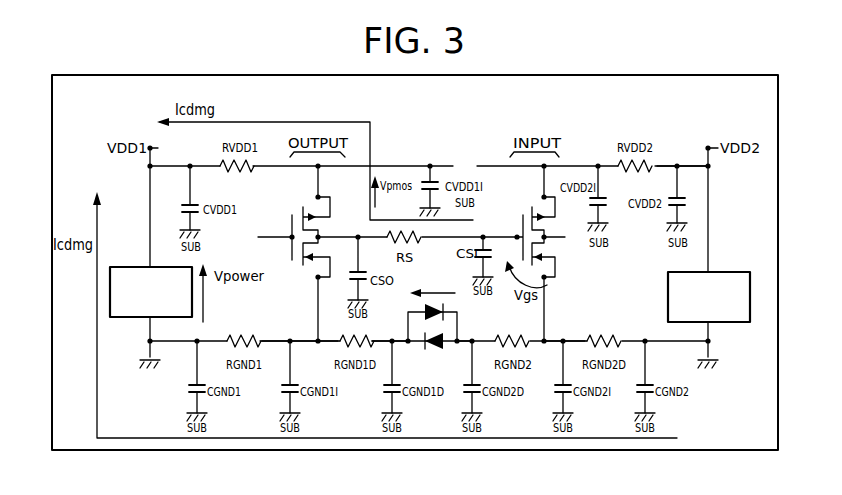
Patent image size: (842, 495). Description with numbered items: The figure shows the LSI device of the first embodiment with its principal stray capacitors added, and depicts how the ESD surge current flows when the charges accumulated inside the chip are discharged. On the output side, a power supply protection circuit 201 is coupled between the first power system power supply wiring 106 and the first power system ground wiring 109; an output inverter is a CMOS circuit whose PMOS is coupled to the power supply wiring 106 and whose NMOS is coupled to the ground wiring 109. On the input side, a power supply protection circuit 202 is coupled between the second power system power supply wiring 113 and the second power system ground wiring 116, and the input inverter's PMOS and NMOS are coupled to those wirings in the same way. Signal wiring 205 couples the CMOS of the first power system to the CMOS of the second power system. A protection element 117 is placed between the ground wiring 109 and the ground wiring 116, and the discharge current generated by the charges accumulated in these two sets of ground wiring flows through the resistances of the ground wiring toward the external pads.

The first power system power supply wiring 106 is at (278, 165).
The first power system ground wiring 109 is at (277, 340).
The second power system power supply wiring 113 is at (661, 165).
The second power system ground wiring 116 is at (556, 340).
The protection element 117 is at (438, 346).
The power supply protection circuit 201 is at (140, 267).
The power supply protection circuit 202 is at (735, 272).
The signal wiring 205 is at (510, 234).